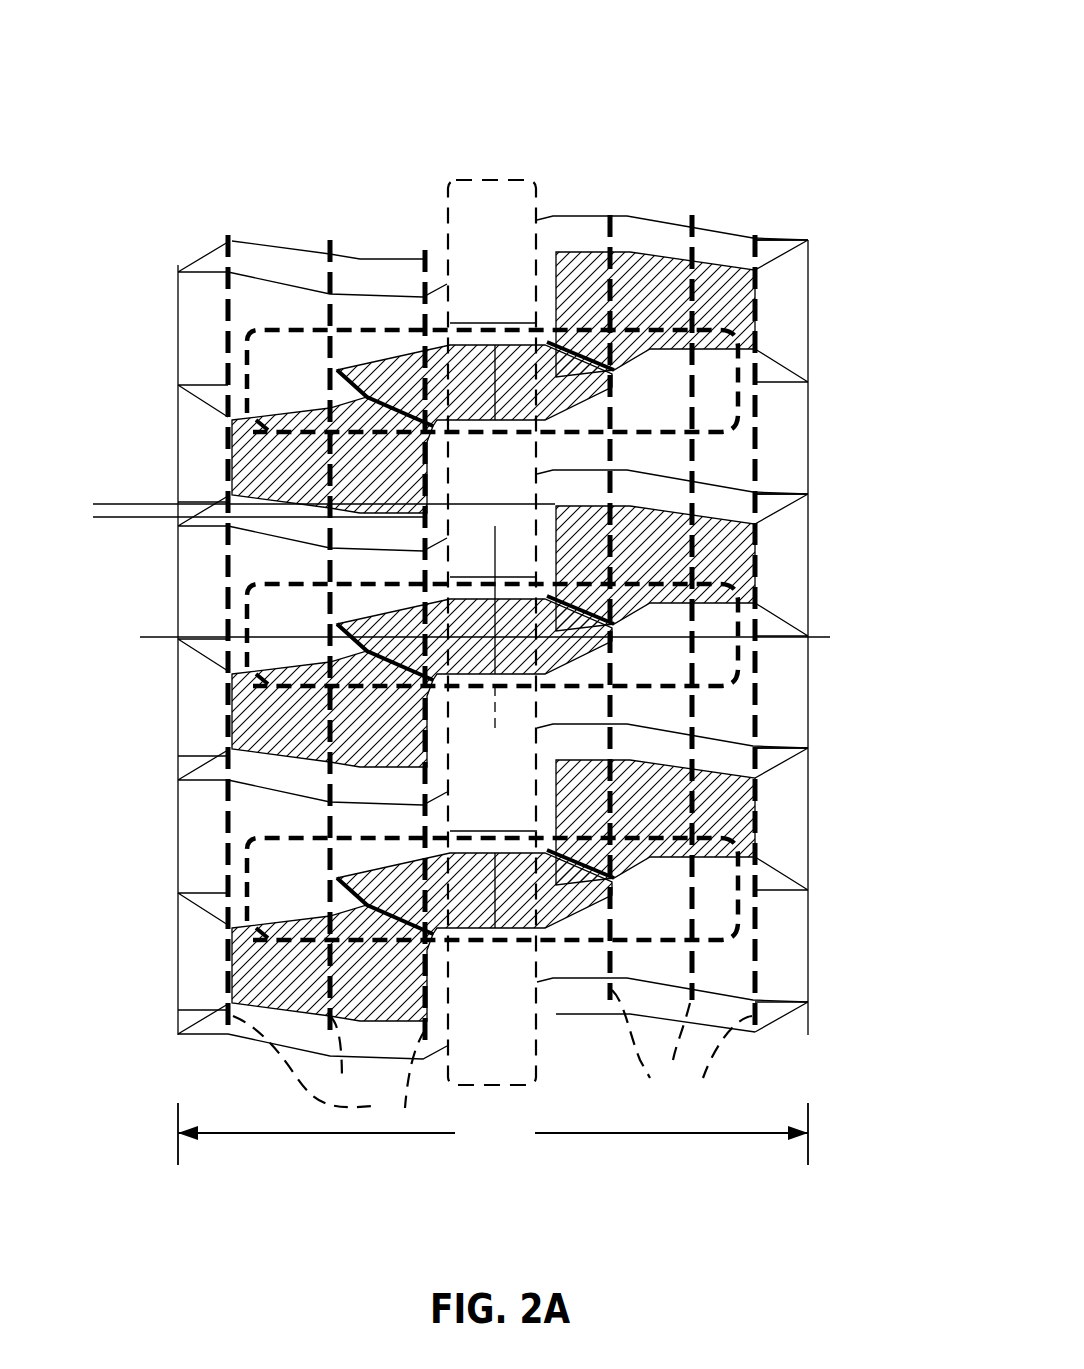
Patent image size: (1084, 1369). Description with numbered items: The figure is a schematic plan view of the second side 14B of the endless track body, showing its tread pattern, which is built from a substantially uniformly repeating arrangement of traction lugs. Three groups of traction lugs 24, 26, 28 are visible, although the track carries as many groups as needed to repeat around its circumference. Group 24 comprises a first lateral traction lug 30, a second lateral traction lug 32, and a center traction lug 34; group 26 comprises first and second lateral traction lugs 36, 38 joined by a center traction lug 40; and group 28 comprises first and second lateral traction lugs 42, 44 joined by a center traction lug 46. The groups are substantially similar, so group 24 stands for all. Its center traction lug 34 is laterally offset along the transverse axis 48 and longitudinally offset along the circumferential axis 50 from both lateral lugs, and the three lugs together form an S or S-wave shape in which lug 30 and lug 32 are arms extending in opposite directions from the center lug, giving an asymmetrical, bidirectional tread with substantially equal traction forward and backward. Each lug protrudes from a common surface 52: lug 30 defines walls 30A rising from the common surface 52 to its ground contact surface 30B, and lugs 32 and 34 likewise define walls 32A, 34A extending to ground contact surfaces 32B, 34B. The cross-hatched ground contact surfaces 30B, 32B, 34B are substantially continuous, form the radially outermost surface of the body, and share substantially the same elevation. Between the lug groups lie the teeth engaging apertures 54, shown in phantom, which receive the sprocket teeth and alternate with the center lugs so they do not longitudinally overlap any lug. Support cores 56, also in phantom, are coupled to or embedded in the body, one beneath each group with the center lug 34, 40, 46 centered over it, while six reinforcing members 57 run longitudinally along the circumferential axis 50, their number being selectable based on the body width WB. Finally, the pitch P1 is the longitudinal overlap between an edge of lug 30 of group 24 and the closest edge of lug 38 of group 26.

The second side of body 14B is at (772, 70).
The first group of traction lugs 24 is at (835, 210).
The second group of traction lugs 26 is at (835, 472).
The third group of traction lugs 28 is at (835, 737).
The first lateral traction lug 30 is at (332, 455).
The walls 30A is at (300, 393).
The ground contact surface 30B is at (332, 376).
The second lateral traction lug 32 is at (655, 314).
The walls 32A is at (628, 244).
The ground contact surface 32B is at (707, 290).
The center traction lug 34 is at (474, 385).
The walls 34A is at (398, 368).
The ground contact surface 34B is at (447, 367).
The first lateral traction lug 36 is at (332, 709).
The second lateral traction lug 38 is at (655, 568).
The center traction lug 40 is at (474, 639).
The first lateral traction lug 42 is at (332, 963).
The second lateral traction lug 44 is at (655, 822).
The center traction lug 46 is at (474, 893).
The transverse axis 48 is at (157, 637).
The circumferential axis 50 is at (425, 676).
The common surface 52 is at (185, 808).
The teeth engaging apertures 54 is at (464, 234).
The support cores 56 is at (247, 872).
The reinforcing members 57 is at (492, 1056).
The pitch P1 is at (115, 443).
The width of body WB is at (493, 1134).